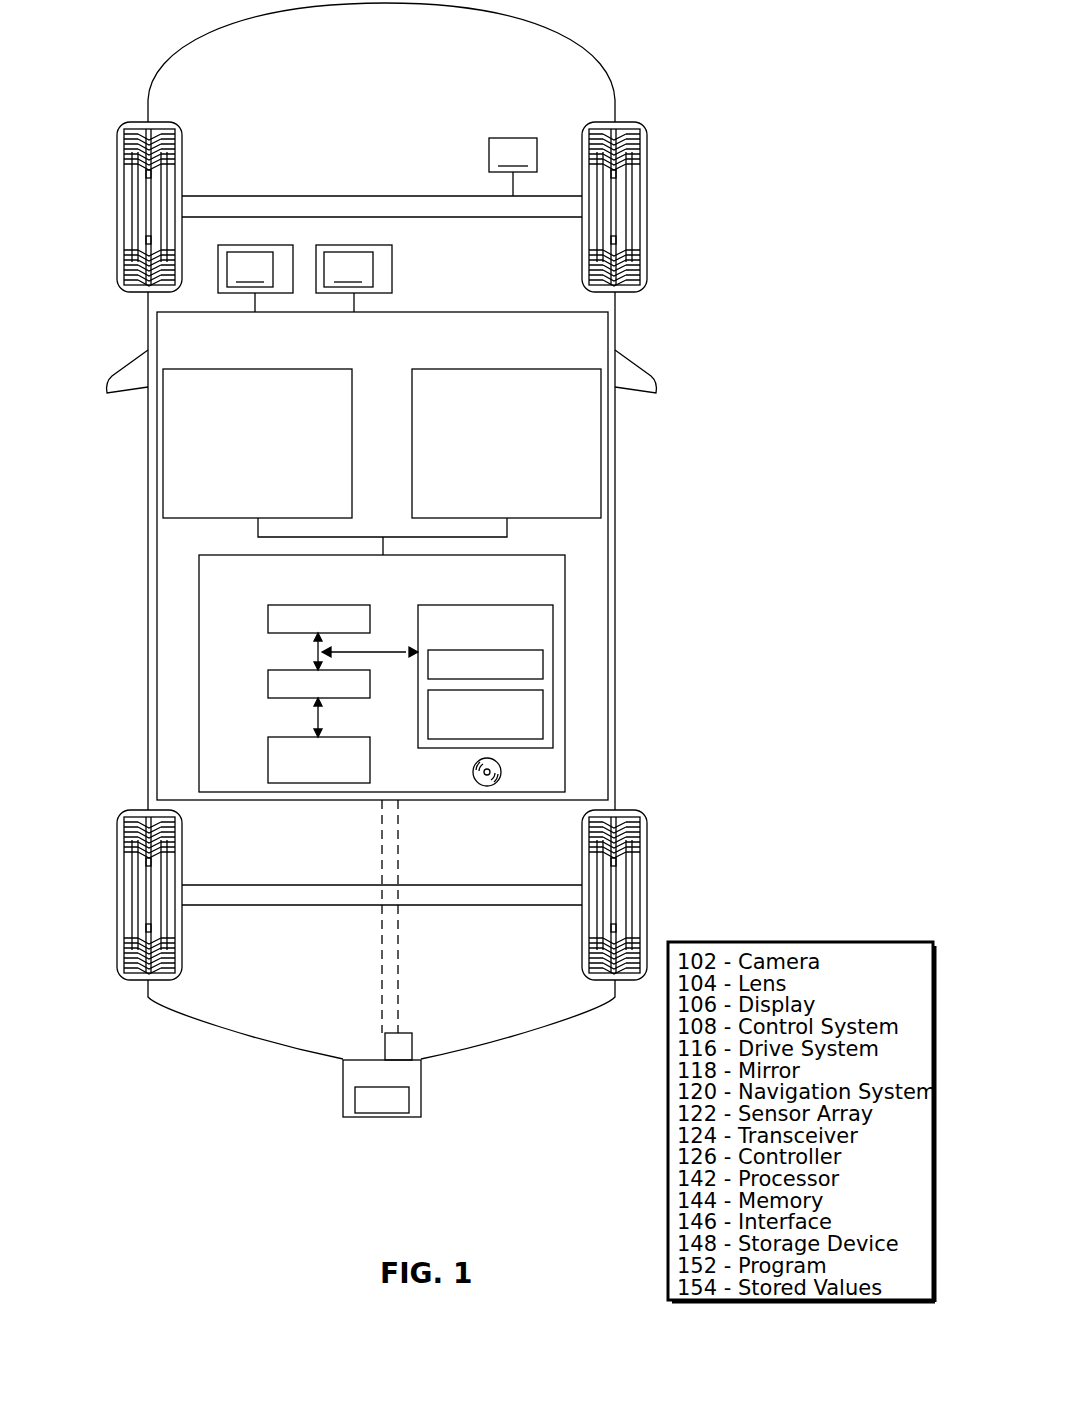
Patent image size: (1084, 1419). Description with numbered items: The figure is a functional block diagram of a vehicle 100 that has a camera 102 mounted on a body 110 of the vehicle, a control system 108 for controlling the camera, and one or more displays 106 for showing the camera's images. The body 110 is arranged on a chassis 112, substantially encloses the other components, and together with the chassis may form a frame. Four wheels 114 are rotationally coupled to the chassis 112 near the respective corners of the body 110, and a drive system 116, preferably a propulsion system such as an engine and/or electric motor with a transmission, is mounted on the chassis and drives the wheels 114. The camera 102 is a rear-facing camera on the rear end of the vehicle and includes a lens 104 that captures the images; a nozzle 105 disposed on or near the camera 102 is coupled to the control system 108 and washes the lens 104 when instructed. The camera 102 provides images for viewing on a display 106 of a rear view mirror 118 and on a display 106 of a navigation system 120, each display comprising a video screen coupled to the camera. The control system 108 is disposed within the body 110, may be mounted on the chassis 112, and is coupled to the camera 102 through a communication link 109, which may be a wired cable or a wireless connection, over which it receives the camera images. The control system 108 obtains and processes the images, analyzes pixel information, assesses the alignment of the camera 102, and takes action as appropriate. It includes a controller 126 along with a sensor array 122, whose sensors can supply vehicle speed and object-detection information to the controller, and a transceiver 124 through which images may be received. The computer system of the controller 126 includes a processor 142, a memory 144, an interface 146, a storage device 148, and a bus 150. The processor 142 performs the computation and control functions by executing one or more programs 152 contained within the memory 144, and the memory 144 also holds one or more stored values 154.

The vehicle 100 is at (126, 23).
The camera 102 is at (343, 1090).
The lens 104 is at (410, 1100).
The nozzle 105 is at (398, 1046).
The display 106 is at (300, 269).
The control system 108 is at (528, 312).
The communication link 109 is at (385, 948).
The body 110 is at (155, 529).
The chassis 112 is at (350, 192).
The wheels 114 is at (117, 207).
The drive system 116 is at (513, 167).
The rear view mirror 118 is at (354, 245).
The navigation system 120 is at (255, 245).
The sensor array 122 is at (222, 369).
The transceiver 124 is at (545, 369).
The controller 126 is at (505, 555).
The processor 142 is at (268, 617).
The memory 144 is at (493, 605).
The interface 146 is at (268, 684).
The storage device 148 is at (268, 760).
The bus 150 is at (316, 655).
The program 152 is at (543, 665).
The stored values 154 is at (543, 715).